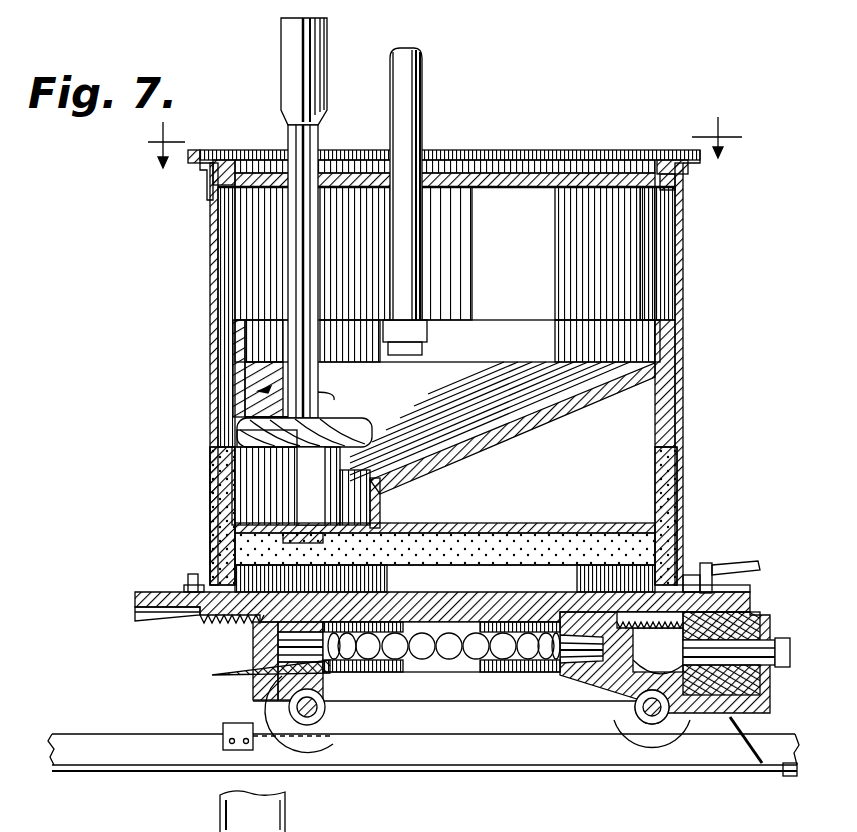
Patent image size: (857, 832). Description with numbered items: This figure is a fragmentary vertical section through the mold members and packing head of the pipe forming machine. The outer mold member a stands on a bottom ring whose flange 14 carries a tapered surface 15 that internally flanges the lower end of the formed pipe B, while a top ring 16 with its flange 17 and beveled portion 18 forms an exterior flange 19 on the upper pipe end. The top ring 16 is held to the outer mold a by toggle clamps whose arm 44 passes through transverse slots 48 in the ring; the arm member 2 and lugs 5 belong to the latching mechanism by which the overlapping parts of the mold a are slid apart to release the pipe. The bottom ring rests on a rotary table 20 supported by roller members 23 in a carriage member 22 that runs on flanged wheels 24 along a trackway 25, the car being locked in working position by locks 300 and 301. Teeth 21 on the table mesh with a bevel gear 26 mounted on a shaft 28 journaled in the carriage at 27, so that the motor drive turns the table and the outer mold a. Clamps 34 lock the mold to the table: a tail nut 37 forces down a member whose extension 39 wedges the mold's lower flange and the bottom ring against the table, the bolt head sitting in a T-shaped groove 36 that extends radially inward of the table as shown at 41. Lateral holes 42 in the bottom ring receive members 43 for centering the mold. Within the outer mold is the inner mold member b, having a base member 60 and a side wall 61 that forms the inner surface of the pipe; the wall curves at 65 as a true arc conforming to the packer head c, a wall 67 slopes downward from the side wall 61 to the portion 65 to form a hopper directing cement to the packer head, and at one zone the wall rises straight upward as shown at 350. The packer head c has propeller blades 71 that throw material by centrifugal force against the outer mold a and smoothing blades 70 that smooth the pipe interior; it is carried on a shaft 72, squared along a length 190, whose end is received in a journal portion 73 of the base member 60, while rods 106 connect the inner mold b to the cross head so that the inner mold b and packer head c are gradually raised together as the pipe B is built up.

The arm member 2 is at (194, 170).
The outer mold member a is at (683, 318).
The exterior flange 19 is at (636, 177).
The transverse openings or slots 48 is at (214, 160).
The toggle clamp arm 44 is at (207, 195).
The top ring 16 is at (684, 175).
The flange of top ring 17 is at (682, 184).
The beveled portion 18 is at (665, 186).
The squared portion of shaft 190 is at (313, 50).
The shaft 72 is at (300, 272).
The rods 106 is at (422, 226).
The straight upward wall portion 350 is at (238, 357).
The propeller blades 71 is at (243, 427).
The packer head c is at (243, 437).
The formed pipe B is at (216, 462).
The smoothing blades 70 is at (240, 483).
The reverse curved wall portion 65 is at (380, 500).
The hopper wall 67 is at (470, 438).
The inner mold member b is at (670, 424).
The side wall 61 is at (662, 443).
The journal portion 73 is at (270, 533).
The base member 60 is at (510, 527).
The tapered surface 15 is at (215, 578).
The flange of bottom ring 14 is at (187, 607).
The centering members 43 is at (190, 578).
The lateral holes 42 is at (185, 586).
The clamp extension 39 is at (686, 580).
The clamps 34 is at (703, 560).
The tail nut 37 is at (737, 563).
The bevel gear 26 is at (768, 712).
The teeth of rotary table 21 is at (750, 612).
The journal 27 is at (762, 636).
The shaft 28 is at (765, 676).
The radial T-shaped groove 41 is at (640, 612).
The T-shaped groove 36 is at (545, 640).
The rotary table 20 is at (293, 603).
The roller members 23 is at (240, 672).
The carriage member 22 is at (253, 695).
The flanged wheels 24 is at (655, 724).
The trackway 25 is at (483, 755).
The lock 301 is at (270, 733).
The lock 300 is at (738, 747).
The lugs 5 is at (443, 142).